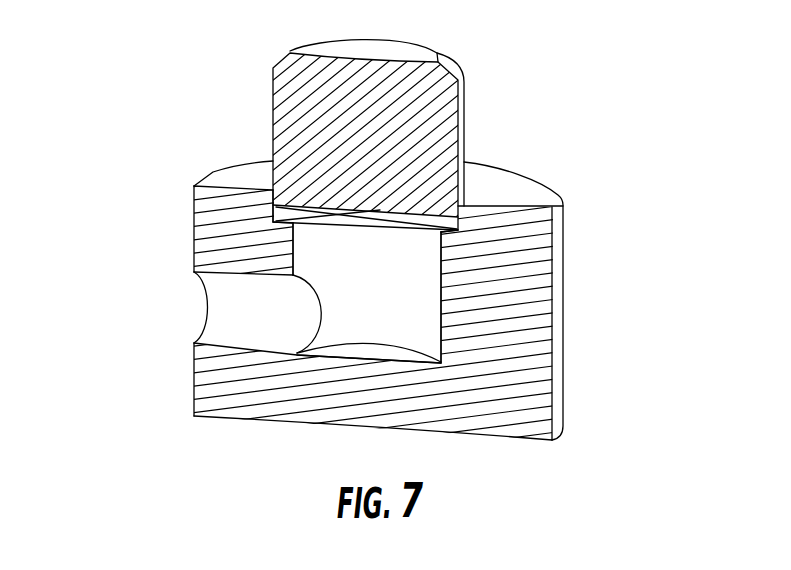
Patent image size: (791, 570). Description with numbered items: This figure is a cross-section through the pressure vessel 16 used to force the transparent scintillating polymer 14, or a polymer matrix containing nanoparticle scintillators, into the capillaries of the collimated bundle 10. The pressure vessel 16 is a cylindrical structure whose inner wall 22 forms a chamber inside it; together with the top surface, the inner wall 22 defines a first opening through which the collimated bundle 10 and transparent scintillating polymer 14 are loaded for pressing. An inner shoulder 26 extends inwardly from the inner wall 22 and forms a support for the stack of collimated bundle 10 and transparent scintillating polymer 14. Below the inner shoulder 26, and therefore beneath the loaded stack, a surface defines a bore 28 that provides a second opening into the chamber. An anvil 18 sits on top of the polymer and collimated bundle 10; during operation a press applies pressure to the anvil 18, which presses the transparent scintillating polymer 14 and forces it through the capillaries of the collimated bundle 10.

The collimated bundle 10 is at (457, 230).
The transparent scintillating polymer 14 is at (441, 230).
The pressure vessel 16 is at (563, 247).
The anvil 18 is at (274, 92).
The inner wall 22 is at (440, 299).
The inner shoulder 26 is at (447, 232).
The bore 28 is at (225, 303).